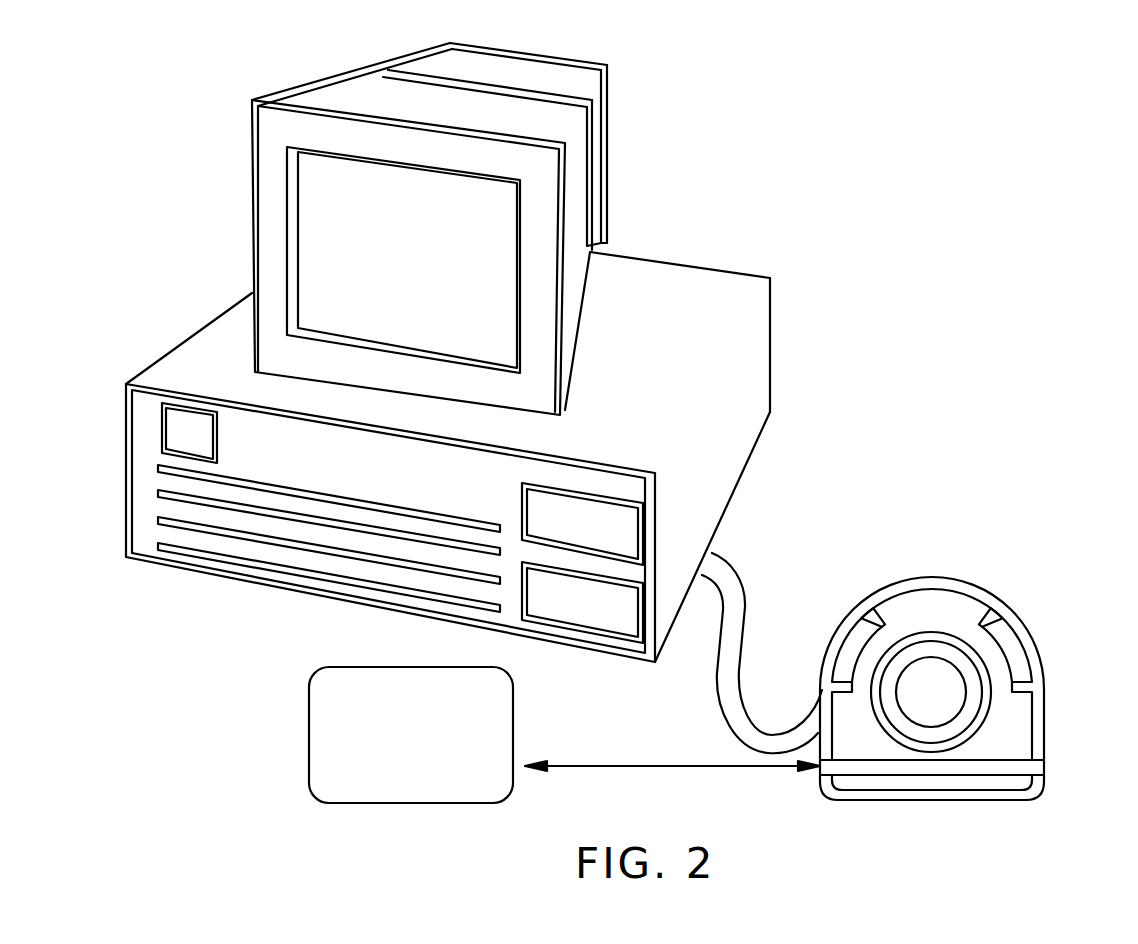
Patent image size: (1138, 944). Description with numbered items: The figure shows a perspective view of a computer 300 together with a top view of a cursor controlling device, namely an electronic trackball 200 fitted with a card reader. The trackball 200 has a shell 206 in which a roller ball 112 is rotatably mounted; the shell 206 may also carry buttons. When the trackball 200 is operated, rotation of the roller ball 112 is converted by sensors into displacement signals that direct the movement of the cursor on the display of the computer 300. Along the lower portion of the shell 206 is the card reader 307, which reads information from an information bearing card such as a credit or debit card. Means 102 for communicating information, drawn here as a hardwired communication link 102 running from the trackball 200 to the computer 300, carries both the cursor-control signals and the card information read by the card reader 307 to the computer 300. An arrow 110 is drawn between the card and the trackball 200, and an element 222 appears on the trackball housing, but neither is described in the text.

The computer 300 is at (742, 441).
The means for communicating information 102 is at (715, 708).
The communication link 110 is at (618, 768).
The electronic trackball 200 is at (957, 684).
The shell 206 is at (1046, 708).
The sensor pad 222 is at (843, 635).
The roller ball 112 is at (903, 713).
The card reader 307 is at (1046, 768).